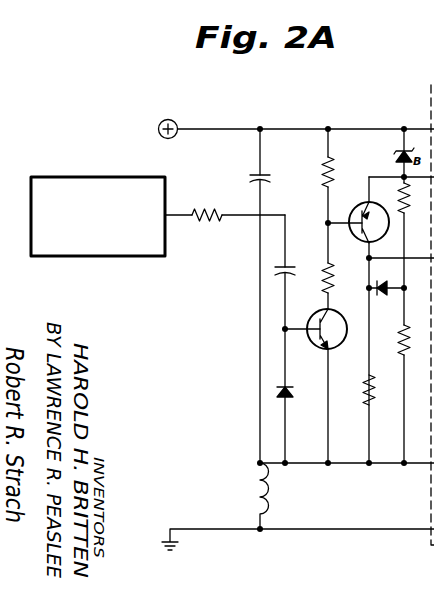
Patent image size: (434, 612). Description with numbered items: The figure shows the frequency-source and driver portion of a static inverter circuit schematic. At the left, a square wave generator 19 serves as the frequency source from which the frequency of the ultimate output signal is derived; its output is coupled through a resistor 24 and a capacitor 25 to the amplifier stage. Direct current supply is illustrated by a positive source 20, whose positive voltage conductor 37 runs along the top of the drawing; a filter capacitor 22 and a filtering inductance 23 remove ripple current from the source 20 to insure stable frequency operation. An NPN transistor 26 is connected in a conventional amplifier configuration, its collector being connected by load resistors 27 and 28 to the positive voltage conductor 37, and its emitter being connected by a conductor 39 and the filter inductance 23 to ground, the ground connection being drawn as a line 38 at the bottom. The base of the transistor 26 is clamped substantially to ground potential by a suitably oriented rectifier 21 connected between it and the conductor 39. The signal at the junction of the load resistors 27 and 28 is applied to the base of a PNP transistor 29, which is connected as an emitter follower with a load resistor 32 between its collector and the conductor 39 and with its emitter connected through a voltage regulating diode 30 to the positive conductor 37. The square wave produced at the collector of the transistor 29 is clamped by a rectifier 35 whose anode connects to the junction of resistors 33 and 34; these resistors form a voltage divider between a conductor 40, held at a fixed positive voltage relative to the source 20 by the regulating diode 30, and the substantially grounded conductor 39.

The square wave generator 19 is at (83, 176).
The direct current source 20 is at (164, 120).
The rectifier 21 is at (290, 390).
The filter capacitor 22 is at (255, 175).
The filtering inductance 23 is at (256, 497).
The resistor 24 is at (221, 210).
The capacitor 25 is at (290, 268).
The NPN transistor 26 is at (322, 311).
The load resistor 27 is at (328, 160).
The load resistor 28 is at (353, 252).
The PNP transistor 29 is at (362, 205).
The voltage regulating diode 30 is at (400, 152).
The load resistor 32 is at (366, 378).
The resistor 33 is at (400, 192).
The resistor 34 is at (398, 347).
The rectifier 35 is at (386, 294).
The positive voltage conductor 37 is at (236, 128).
The ground line 38 is at (242, 531).
The conductor 39 is at (348, 466).
The conductor 40 is at (391, 176).